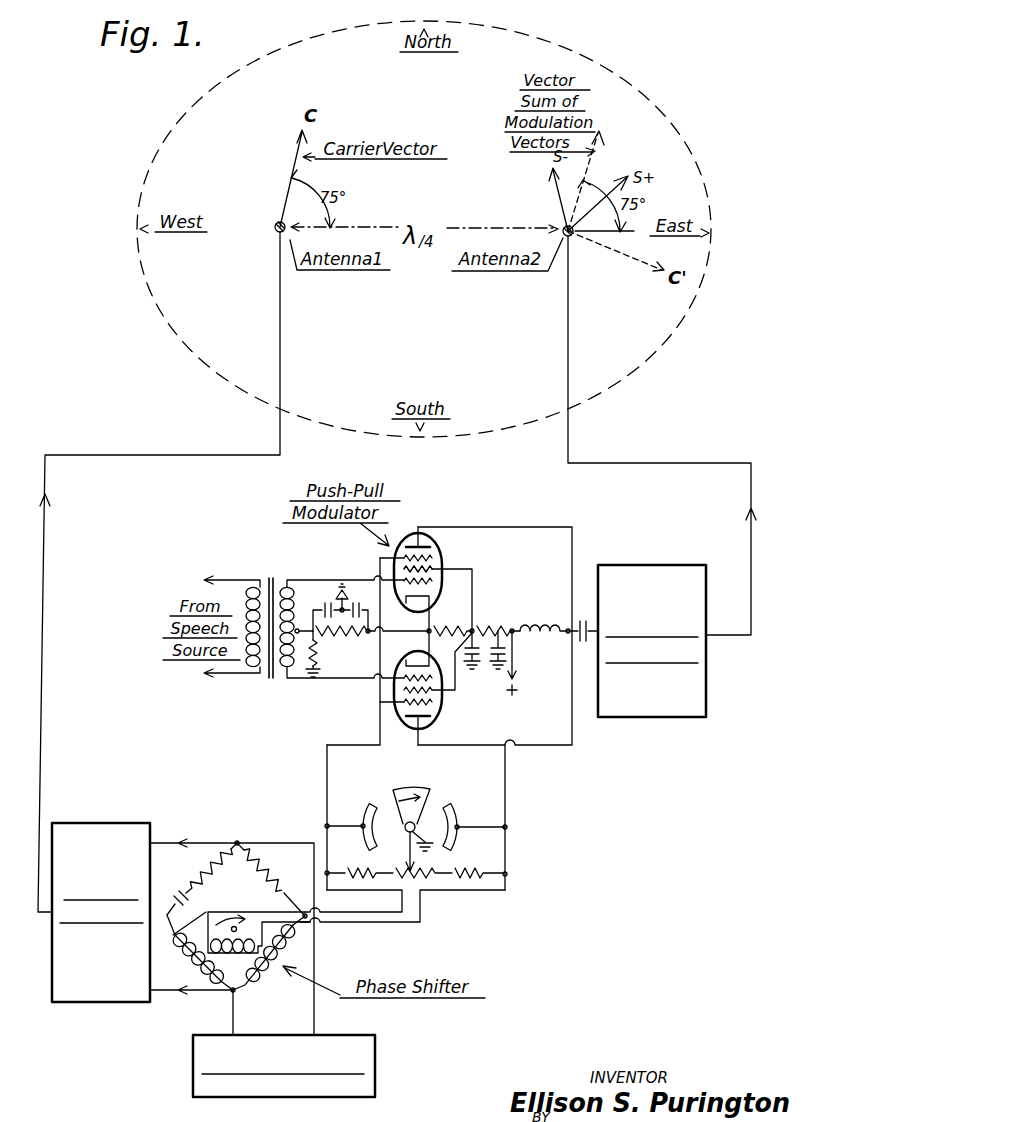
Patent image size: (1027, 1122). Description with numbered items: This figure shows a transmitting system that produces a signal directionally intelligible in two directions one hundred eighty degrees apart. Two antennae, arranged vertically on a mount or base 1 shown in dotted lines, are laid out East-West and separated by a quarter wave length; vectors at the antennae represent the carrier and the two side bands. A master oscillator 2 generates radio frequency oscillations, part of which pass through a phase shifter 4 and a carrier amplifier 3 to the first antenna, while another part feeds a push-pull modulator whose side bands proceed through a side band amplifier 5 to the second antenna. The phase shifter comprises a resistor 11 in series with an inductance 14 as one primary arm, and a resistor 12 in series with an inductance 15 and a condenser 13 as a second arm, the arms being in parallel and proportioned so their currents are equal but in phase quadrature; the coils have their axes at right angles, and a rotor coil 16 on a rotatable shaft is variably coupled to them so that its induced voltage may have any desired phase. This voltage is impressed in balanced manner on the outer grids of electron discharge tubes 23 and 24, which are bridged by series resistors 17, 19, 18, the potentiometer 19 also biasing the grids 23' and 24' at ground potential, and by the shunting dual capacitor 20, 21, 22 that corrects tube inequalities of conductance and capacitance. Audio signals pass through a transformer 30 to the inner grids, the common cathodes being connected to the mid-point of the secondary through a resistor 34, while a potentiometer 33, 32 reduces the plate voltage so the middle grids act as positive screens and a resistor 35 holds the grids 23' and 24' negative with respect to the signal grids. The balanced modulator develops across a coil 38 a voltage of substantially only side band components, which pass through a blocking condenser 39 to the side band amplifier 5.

The mount 1 is at (657, 348).
The master oscillator 2 is at (377, 1041).
The carrier amplifier 3 is at (103, 1005).
The phase shifter 4 is at (176, 941).
The side band amplifier 5 is at (656, 568).
The resistor 11 is at (287, 881).
The resistor 12 is at (207, 864).
The condenser 13 is at (178, 892).
The inductance 14 is at (264, 977).
The inductance 15 is at (198, 968).
The rotor coil 16 is at (222, 940).
The resistor 17 is at (378, 870).
The resistor 18 is at (470, 870).
The potentiometer 19 is at (428, 880).
The dual capacitor plate 20 is at (364, 803).
The dual capacitor plate 21 is at (466, 804).
The dual capacitor rotor 22 is at (413, 797).
The electron discharge tube 23 is at (438, 579).
The grid 23' is at (453, 561).
The electron discharge tube 24 is at (434, 688).
The grid 24' is at (365, 663).
The transformer 30 is at (271, 681).
The potentiometer 32 is at (498, 625).
The potentiometer 33 is at (450, 625).
The resistor 34 is at (365, 620).
The resistor 35 is at (320, 661).
The coil 38 is at (543, 625).
The blocking condenser 39 is at (583, 623).